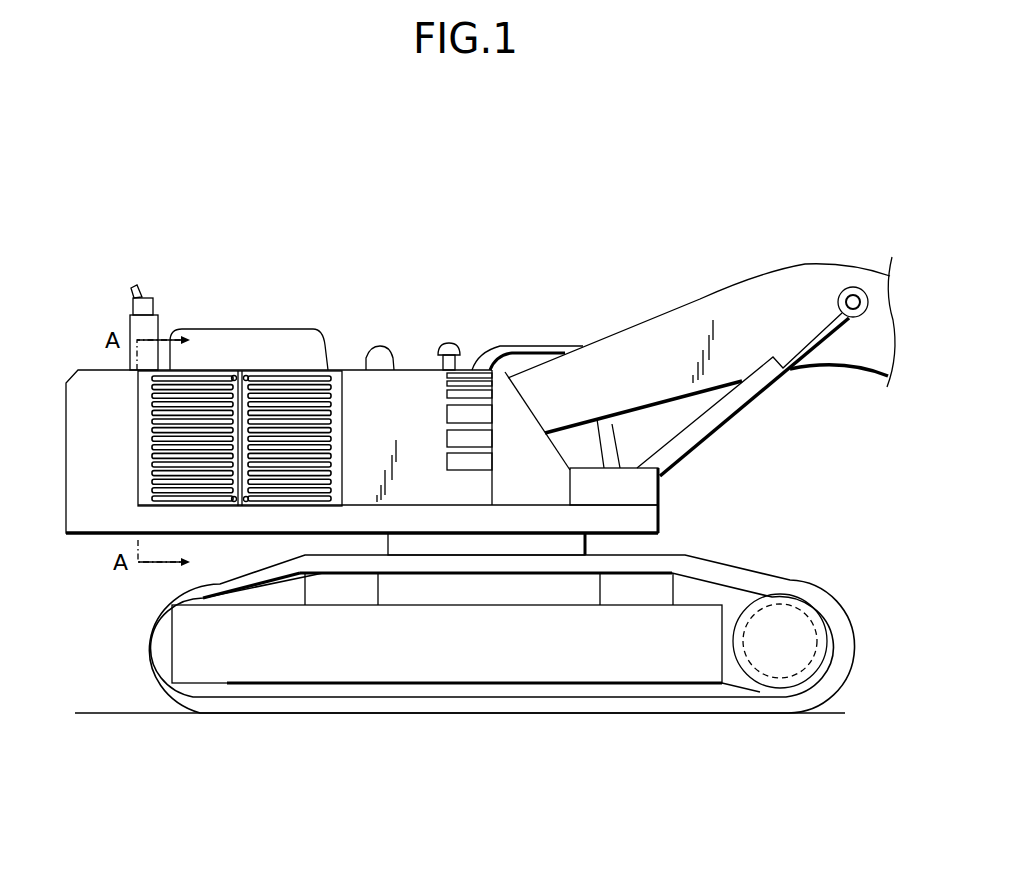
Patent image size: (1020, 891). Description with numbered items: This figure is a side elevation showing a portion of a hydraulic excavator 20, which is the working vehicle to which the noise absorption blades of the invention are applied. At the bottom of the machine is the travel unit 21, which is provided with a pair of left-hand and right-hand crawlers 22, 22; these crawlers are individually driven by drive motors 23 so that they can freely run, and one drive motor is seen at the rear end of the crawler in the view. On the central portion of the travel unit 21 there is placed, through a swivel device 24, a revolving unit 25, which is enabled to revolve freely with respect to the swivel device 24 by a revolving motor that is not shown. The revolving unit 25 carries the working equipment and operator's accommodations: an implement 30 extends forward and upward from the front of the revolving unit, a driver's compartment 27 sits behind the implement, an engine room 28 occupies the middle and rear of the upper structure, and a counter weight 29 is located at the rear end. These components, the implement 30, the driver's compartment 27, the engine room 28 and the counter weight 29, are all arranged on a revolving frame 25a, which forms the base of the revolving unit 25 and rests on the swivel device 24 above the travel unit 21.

The hydraulic excavator 20 is at (480, 264).
The travel unit 21 is at (852, 687).
The crawlers 22 is at (843, 607).
The drive motors 23 is at (788, 598).
The swivel device 24 is at (588, 545).
The revolving unit 25 is at (422, 328).
The revolving frame 25a is at (660, 490).
The driver's compartment 27 is at (543, 347).
The engine room 28 is at (330, 370).
The counter weight 29 is at (72, 372).
The implement 30 is at (762, 256).